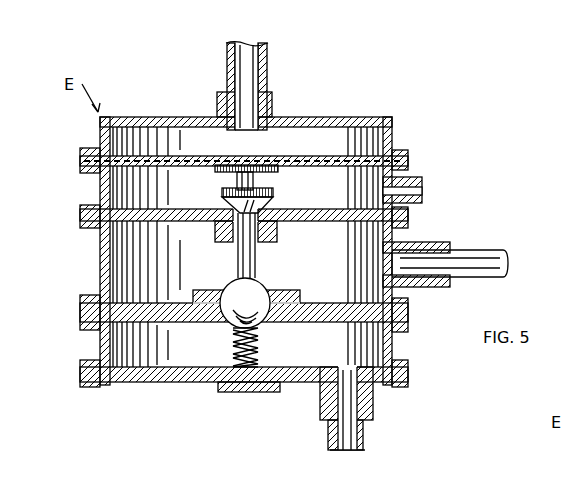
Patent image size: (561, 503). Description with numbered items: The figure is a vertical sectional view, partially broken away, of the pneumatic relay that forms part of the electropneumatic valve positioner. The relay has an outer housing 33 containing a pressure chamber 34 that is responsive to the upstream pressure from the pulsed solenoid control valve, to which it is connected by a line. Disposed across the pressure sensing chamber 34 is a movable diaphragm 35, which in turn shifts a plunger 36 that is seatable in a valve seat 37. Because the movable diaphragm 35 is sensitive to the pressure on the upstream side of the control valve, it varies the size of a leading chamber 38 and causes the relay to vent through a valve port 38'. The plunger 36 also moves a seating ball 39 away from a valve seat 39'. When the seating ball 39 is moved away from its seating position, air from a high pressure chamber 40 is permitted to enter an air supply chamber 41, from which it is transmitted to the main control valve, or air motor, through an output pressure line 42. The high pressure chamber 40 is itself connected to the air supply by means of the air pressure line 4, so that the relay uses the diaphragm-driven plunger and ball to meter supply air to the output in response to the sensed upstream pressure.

The air pressure line 4 is at (365, 447).
The outer housing 33 is at (362, 134).
The pressure chamber 34 is at (155, 136).
The movable diaphragm 35 is at (297, 158).
The plunger 36 is at (225, 196).
The valve seat 37 is at (267, 210).
The leading chamber 38 is at (219, 176).
The valve port 38' is at (431, 190).
The seating ball 39 is at (220, 348).
The valve seat 39' is at (244, 326).
The high pressure chamber 40 is at (162, 352).
The air supply chamber 41 is at (132, 250).
The output pressure line 42 is at (483, 250).